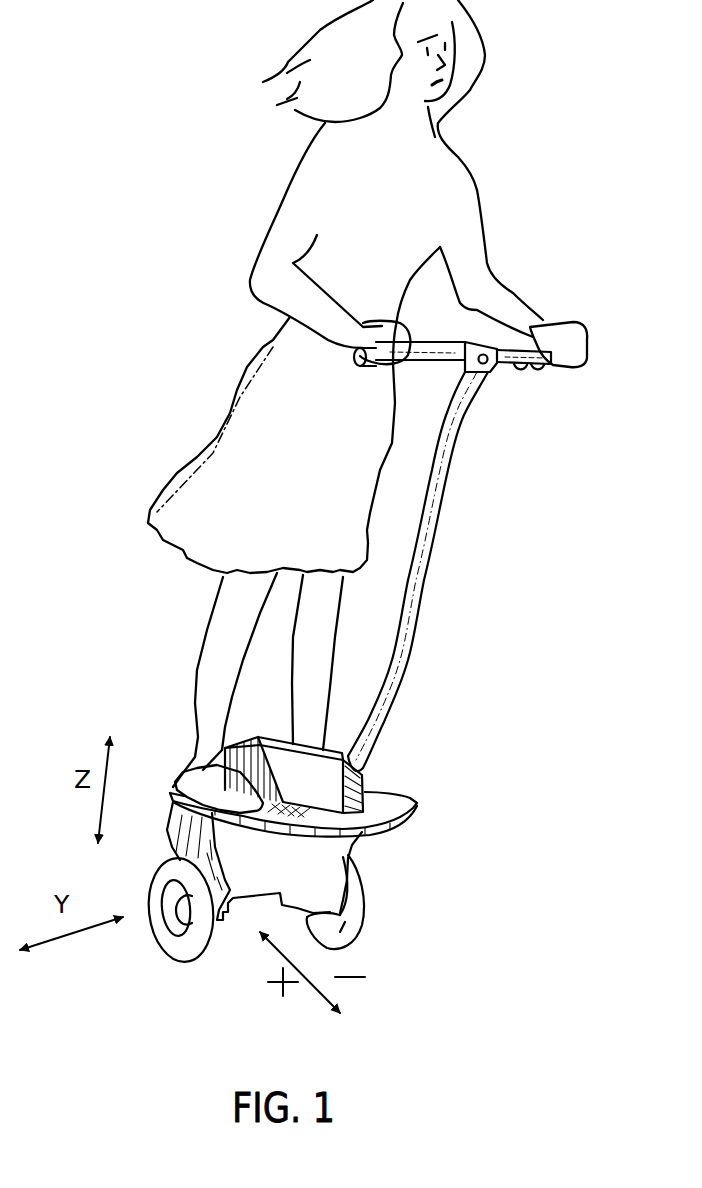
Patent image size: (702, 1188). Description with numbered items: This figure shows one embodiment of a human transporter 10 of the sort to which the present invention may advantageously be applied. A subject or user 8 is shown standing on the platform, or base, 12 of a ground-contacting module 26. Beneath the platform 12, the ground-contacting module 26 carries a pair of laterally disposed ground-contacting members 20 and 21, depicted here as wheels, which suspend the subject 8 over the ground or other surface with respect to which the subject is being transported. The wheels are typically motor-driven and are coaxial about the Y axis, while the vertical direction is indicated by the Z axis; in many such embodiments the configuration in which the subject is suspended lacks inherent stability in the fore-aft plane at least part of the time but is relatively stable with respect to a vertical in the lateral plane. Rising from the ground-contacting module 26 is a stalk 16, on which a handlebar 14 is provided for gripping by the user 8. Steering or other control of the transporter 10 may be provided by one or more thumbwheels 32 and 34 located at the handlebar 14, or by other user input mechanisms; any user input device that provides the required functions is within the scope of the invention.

The subject 8 is at (463, 175).
The transporter 10 is at (137, 392).
The platform 12 is at (414, 810).
The handlebar 14 is at (488, 368).
The stalk 16 is at (422, 533).
The ground-contacting member 20 is at (360, 920).
The ground-contacting member 21 is at (175, 962).
The ground-contacting module 26 is at (392, 880).
The thumbwheel 32 is at (543, 367).
The thumbwheel 34 is at (517, 368).